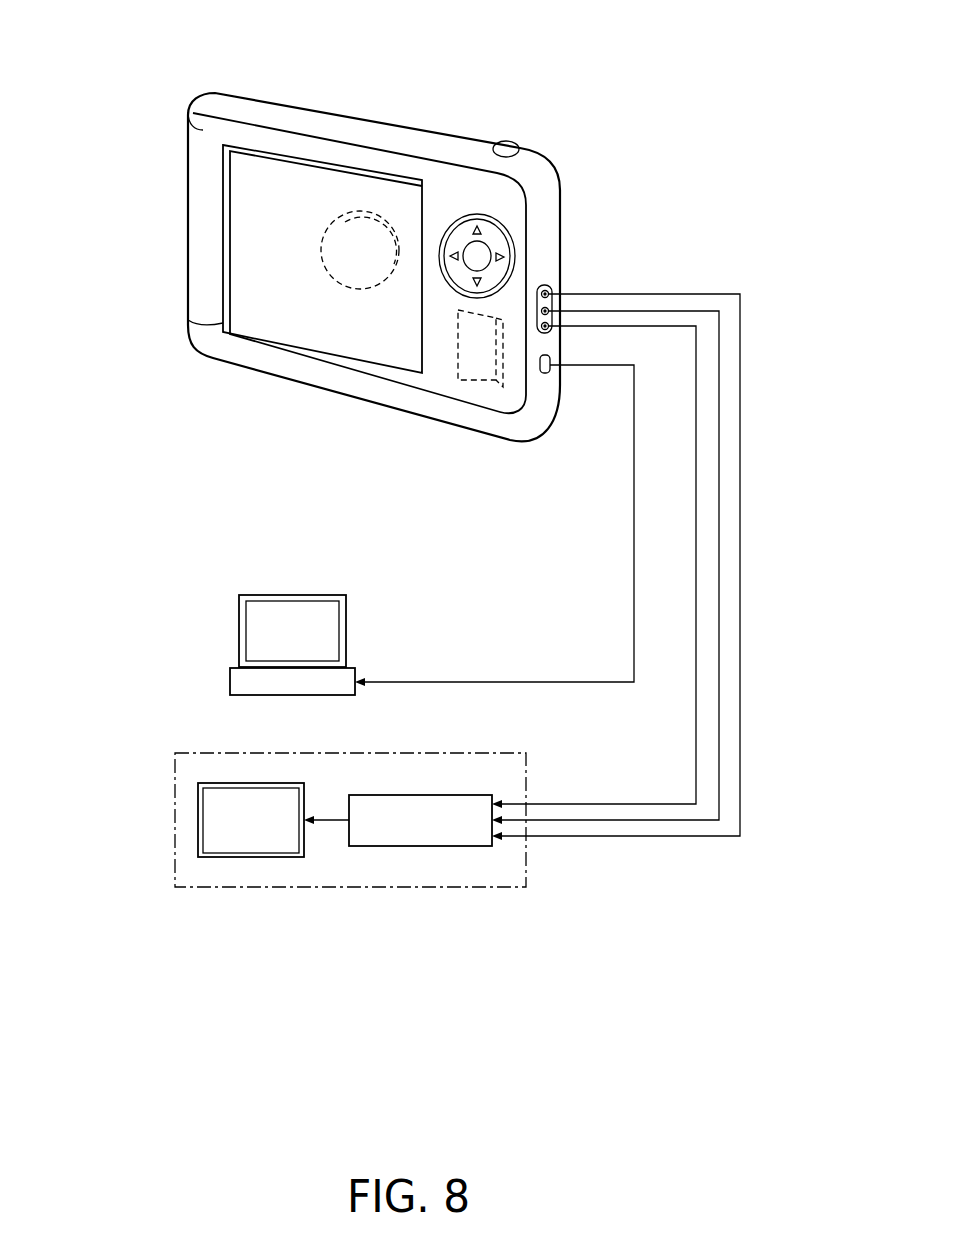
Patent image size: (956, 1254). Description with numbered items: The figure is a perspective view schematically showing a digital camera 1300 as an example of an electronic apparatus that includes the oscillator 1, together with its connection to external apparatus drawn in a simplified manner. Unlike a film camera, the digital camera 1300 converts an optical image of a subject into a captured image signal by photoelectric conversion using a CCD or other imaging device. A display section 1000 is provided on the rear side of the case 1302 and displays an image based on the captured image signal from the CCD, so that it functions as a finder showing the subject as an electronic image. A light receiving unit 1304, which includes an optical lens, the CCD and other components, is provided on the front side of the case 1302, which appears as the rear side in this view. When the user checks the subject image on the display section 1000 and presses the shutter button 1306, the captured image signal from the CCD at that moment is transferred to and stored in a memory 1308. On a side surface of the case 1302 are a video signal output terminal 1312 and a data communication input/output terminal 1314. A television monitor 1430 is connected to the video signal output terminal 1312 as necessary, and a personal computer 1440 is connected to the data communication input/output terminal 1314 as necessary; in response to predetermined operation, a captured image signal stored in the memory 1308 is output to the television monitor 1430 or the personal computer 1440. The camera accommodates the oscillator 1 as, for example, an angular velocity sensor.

The digital camera 1300 is at (476, 80).
The case 1302 is at (208, 130).
The light receiving unit 1304 is at (370, 212).
The shutter button 1306 is at (507, 143).
The display section 1000 is at (303, 323).
The oscillator 1 is at (445, 360).
The memory 1308 is at (487, 375).
The video signal output terminal 1312 is at (552, 285).
The data communication input/output terminal 1314 is at (549, 368).
The personal computer 1440 is at (239, 634).
The television monitor 1430 is at (175, 822).